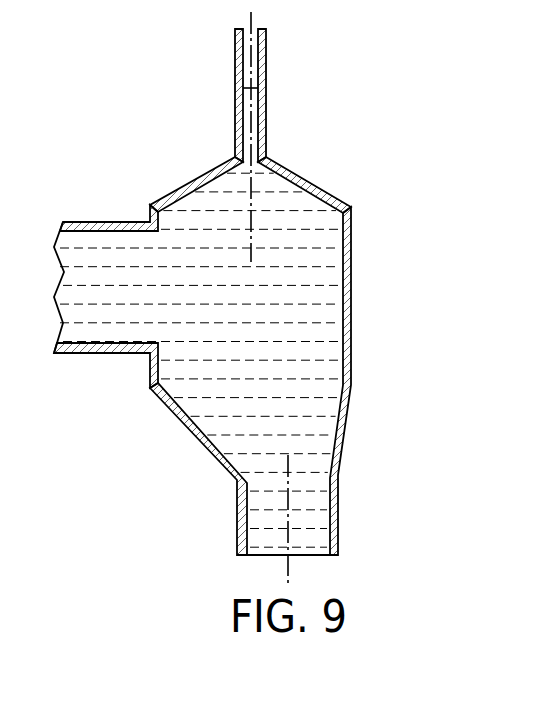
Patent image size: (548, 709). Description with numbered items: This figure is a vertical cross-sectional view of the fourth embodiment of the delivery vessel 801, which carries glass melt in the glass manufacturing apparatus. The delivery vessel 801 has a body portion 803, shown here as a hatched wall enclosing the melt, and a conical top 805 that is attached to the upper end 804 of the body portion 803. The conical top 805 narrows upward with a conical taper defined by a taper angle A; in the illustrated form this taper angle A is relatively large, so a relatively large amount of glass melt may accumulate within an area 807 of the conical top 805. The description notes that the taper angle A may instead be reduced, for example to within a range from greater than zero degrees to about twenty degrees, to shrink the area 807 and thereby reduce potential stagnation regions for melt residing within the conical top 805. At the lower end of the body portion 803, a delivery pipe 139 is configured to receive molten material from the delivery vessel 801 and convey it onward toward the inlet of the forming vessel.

The delivery vessel 801 is at (226, 279).
The body portion 803 is at (352, 250).
The upper end 804 is at (352, 208).
The conical top 805 is at (207, 173).
The area 807 is at (257, 192).
The delivery pipe 139 is at (338, 516).
The taper angle A is at (182, 238).